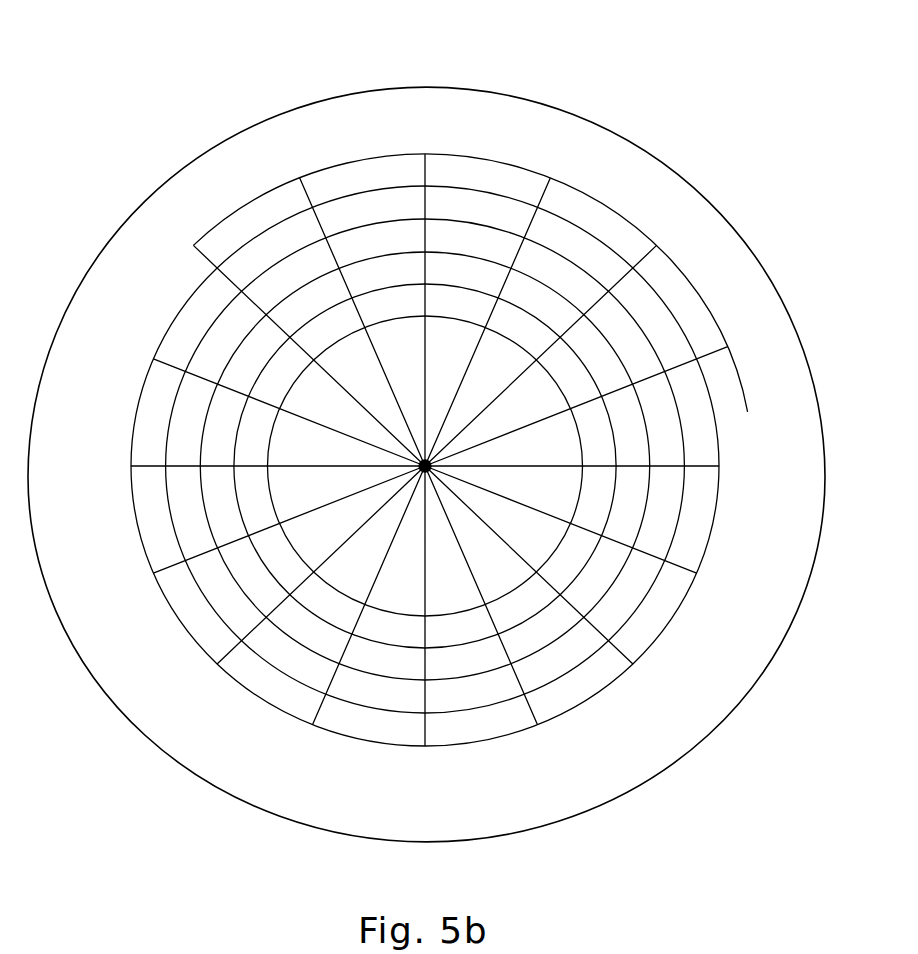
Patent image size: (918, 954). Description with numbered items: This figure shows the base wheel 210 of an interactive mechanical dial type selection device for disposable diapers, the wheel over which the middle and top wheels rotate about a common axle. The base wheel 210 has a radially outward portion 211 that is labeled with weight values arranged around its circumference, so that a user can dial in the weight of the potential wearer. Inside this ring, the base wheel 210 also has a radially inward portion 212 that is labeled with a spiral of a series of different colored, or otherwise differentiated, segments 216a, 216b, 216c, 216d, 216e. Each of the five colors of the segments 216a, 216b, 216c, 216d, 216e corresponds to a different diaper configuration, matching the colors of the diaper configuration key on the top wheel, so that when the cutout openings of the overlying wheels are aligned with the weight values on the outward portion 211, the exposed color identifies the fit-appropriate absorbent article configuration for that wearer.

The base wheel 210 is at (540, 102).
The radially outward portion 211 is at (727, 234).
The radially inward portion 212 is at (275, 434).
The colored segment 216a is at (470, 283).
The colored segment 216b is at (425, 466).
The colored segment 216c is at (425, 466).
The colored segment 216d is at (424, 466).
The colored segment 216e is at (425, 466).